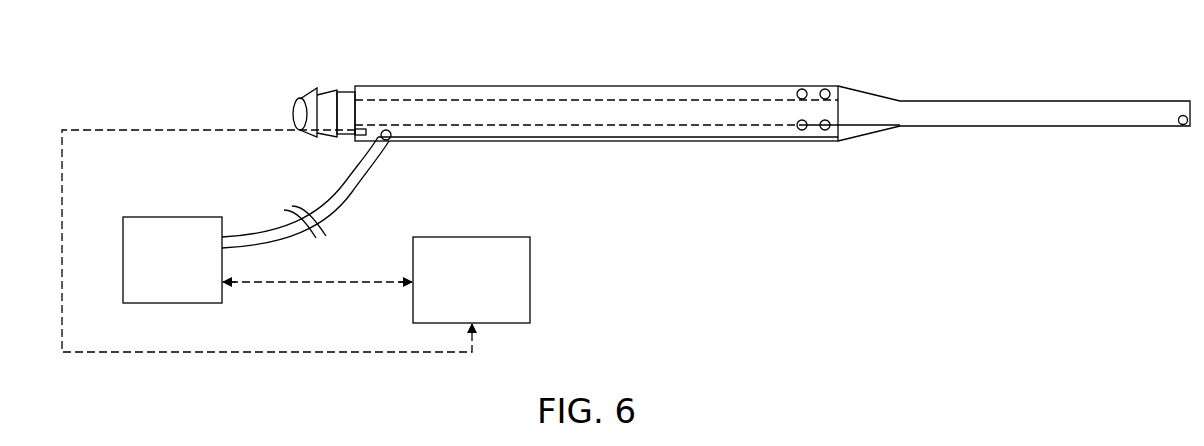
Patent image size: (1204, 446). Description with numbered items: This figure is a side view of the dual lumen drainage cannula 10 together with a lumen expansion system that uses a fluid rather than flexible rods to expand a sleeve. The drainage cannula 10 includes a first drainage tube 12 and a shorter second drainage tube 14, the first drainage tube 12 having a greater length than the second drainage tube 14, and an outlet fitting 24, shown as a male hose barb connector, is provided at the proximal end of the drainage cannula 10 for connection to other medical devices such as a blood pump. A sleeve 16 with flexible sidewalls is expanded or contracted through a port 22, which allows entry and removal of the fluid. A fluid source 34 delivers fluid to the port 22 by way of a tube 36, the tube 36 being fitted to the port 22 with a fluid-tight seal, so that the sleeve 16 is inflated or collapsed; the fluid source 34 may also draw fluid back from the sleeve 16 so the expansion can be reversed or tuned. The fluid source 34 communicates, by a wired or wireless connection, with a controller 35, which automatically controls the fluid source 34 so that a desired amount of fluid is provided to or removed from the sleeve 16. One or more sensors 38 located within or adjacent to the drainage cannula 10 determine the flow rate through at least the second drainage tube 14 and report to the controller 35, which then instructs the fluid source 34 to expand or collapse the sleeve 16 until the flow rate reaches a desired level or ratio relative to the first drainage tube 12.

The dual lumen drainage cannula 10 is at (741, 114).
The first drainage tube 12 is at (1015, 101).
The second drainage tube 14 is at (597, 86).
The sleeve 16 is at (598, 141).
The port 22 is at (390, 140).
The outlet fitting 24 is at (331, 74).
The fluid source 34 is at (173, 217).
The controller 35 is at (530, 281).
The tube 36 is at (249, 230).
The sensors 38 is at (363, 130).